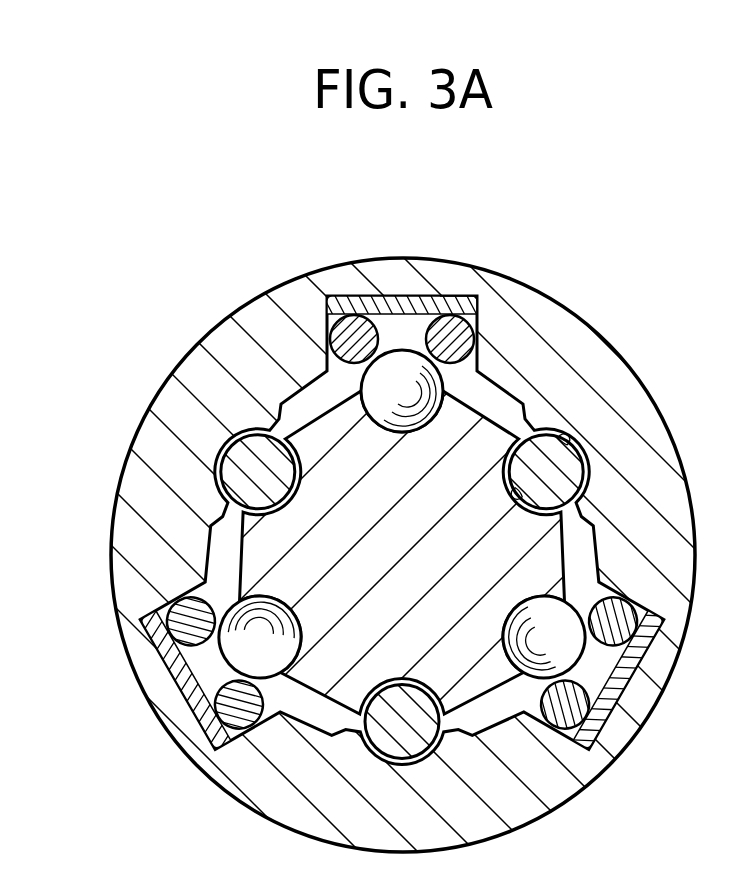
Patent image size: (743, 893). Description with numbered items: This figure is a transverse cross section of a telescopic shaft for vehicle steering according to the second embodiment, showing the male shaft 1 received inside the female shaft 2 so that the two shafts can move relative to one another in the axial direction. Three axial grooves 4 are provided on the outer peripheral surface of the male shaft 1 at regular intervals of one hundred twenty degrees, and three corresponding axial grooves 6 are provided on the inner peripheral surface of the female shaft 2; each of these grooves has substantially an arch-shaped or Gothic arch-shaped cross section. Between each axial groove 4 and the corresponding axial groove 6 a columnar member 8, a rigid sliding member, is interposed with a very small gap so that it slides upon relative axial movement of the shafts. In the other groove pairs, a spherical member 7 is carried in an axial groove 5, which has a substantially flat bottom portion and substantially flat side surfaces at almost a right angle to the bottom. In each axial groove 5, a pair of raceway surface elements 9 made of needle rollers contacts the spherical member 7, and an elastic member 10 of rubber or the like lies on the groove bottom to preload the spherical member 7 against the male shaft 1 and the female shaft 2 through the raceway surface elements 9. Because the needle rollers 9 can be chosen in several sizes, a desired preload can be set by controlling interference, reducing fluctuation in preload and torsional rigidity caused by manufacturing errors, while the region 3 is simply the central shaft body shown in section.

The male shaft 1 is at (212, 338).
The female shaft 2 is at (259, 294).
The inner hub 3 is at (374, 410).
The axial groove 4 is at (512, 524).
The axial groove 5 is at (338, 297).
The axial groove 6 is at (590, 418).
The spherical member 7 is at (394, 366).
The columnar member 8 is at (590, 477).
The raceway surface element 9 is at (479, 345).
The elastic member 10 is at (451, 296).